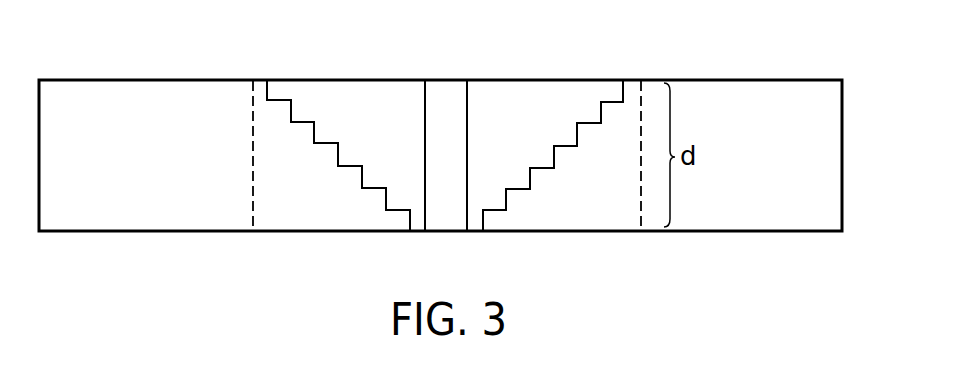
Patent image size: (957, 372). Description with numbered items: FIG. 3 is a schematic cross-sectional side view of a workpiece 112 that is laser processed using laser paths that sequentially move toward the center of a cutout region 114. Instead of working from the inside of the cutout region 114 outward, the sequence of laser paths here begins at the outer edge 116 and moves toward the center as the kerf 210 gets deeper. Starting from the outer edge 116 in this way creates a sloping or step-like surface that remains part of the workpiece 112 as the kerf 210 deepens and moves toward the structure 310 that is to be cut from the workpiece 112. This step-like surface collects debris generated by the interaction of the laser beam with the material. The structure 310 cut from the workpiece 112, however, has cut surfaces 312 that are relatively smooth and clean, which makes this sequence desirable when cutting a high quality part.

The workpiece 112 is at (113, 167).
The cutout region 114 is at (641, 57).
The outer edge 116 is at (253, 140).
The structure 310 is at (425, 113).
The cut surfaces 312 is at (467, 153).
The kerf 210 is at (495, 162).